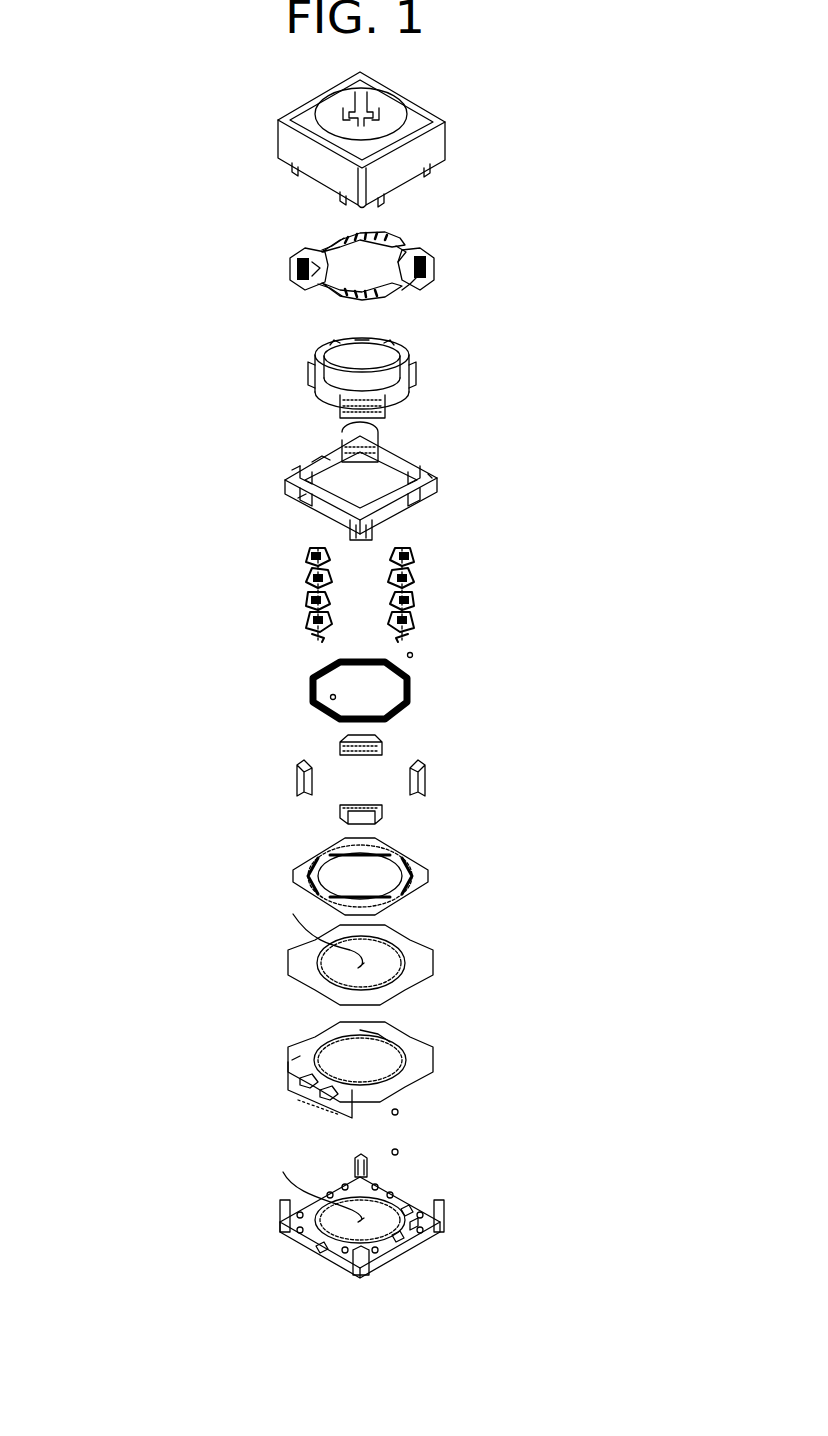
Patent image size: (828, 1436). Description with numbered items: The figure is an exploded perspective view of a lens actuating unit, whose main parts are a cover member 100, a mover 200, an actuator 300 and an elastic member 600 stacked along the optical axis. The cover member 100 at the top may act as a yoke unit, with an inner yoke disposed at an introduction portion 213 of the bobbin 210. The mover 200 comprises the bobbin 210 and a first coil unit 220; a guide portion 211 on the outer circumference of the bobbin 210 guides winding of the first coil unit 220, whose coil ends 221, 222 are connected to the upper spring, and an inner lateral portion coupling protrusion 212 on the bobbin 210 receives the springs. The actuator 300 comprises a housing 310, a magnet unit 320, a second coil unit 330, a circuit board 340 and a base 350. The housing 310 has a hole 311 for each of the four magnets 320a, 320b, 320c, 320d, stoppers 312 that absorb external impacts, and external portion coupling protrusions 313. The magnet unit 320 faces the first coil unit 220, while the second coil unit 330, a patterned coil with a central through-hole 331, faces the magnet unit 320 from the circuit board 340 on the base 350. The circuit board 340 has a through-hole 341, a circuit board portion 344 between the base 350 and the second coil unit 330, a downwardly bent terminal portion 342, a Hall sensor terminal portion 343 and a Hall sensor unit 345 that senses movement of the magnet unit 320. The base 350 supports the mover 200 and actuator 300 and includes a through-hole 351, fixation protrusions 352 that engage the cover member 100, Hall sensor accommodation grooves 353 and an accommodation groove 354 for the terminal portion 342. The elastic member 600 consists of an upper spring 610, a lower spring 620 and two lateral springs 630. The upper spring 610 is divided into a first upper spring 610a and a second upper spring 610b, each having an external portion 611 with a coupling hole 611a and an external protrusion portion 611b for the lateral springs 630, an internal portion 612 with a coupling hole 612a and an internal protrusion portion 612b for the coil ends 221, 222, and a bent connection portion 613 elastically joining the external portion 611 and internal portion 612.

The cover member 100 is at (262, 117).
The mover 200 is at (301, 528).
The bobbin 210 is at (336, 391).
The guide portion 211 is at (410, 398).
The inner lateral portion coupling protrusion 212 is at (410, 348).
The introduction portion 213 is at (405, 397).
The first coil unit 220 is at (325, 678).
The one end of the coil 221 is at (410, 655).
The other end of the coil 222 is at (335, 697).
The actuator 300 is at (411, 866).
The housing 310 is at (394, 481).
The hole 311 is at (310, 462).
The stopper 312 is at (292, 470).
The external portion coupling protrusion 313 is at (298, 498).
The magnet unit 320 is at (399, 778).
The magnet 320a is at (340, 745).
The magnet 320b is at (427, 765).
The magnet 320c is at (378, 812).
The magnet 320d is at (295, 776).
The second coil unit 330 is at (423, 947).
The through-hole 331 is at (310, 929).
The circuit board 340 is at (384, 1072).
The through-hole 341 is at (366, 1060).
The terminal portion 342 is at (293, 1078).
The Hall sensor terminal portion 343 is at (378, 1033).
The circuit board portion 344 is at (292, 1060).
The Hall sensor unit 345 is at (398, 1112).
The base 350 is at (411, 1228).
The through-hole 351 is at (314, 1183).
The fixation protrusion 352 is at (372, 1162).
The Hall sensor accommodation groove 353 is at (405, 1213).
The accommodation groove 354 is at (322, 1250).
The elastic member 600 is at (390, 251).
The upper spring 610 is at (449, 255).
The first upper spring 610a is at (392, 233).
The second upper spring 610b is at (430, 262).
The external portion 611 is at (292, 262).
The external portion coupling hole 611a is at (335, 292).
The external protrusion portion 611b is at (402, 292).
The internal portion 612 is at (318, 286).
The internal portion coupling hole 612a is at (325, 250).
The internal protrusion portion 612b is at (405, 285).
The connection portion 613 is at (292, 268).
The lower spring 620 is at (435, 876).
The lateral spring 630 is at (435, 582).